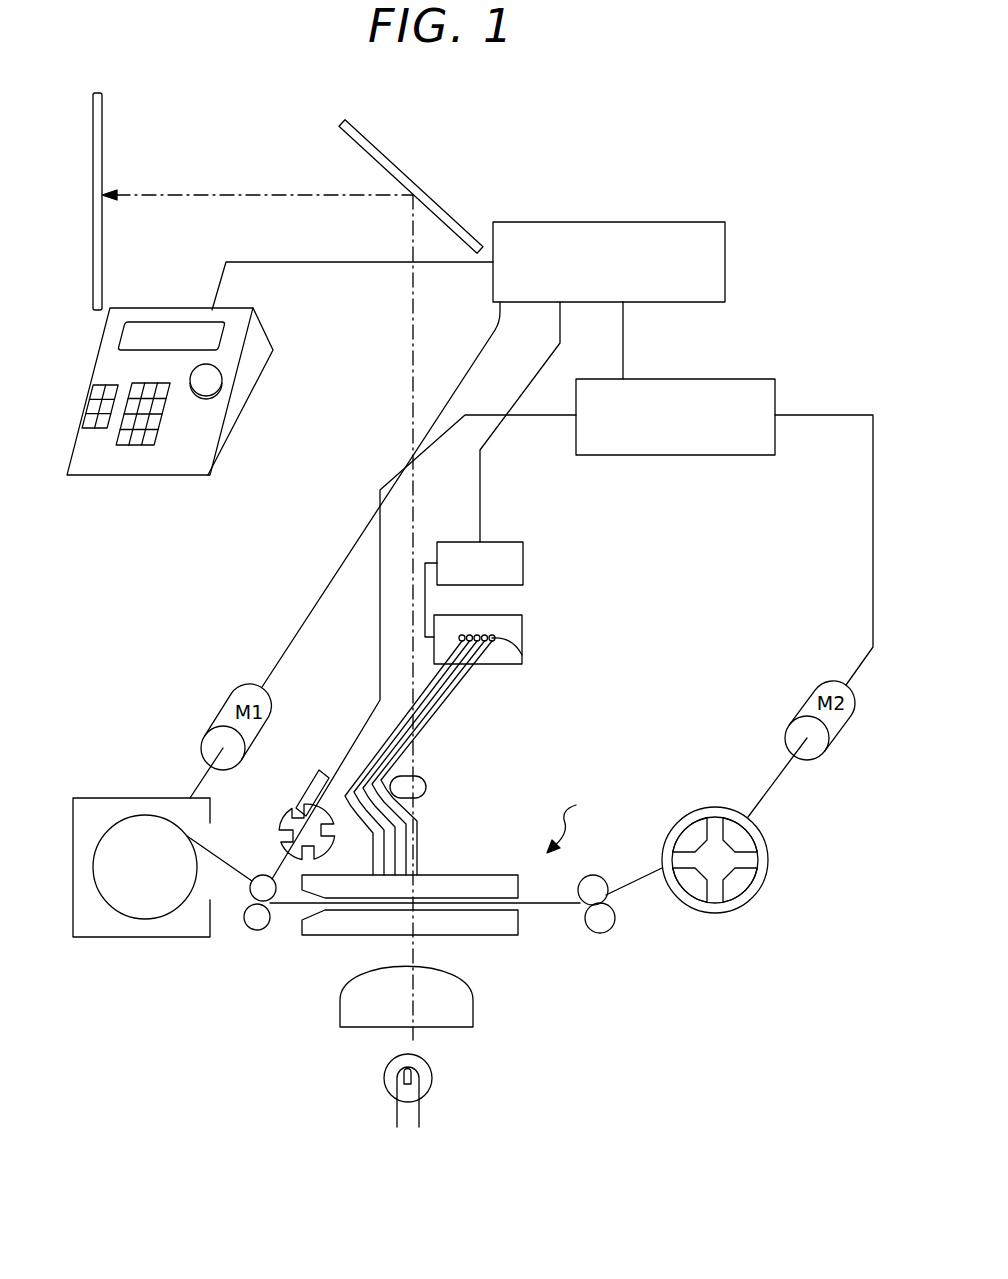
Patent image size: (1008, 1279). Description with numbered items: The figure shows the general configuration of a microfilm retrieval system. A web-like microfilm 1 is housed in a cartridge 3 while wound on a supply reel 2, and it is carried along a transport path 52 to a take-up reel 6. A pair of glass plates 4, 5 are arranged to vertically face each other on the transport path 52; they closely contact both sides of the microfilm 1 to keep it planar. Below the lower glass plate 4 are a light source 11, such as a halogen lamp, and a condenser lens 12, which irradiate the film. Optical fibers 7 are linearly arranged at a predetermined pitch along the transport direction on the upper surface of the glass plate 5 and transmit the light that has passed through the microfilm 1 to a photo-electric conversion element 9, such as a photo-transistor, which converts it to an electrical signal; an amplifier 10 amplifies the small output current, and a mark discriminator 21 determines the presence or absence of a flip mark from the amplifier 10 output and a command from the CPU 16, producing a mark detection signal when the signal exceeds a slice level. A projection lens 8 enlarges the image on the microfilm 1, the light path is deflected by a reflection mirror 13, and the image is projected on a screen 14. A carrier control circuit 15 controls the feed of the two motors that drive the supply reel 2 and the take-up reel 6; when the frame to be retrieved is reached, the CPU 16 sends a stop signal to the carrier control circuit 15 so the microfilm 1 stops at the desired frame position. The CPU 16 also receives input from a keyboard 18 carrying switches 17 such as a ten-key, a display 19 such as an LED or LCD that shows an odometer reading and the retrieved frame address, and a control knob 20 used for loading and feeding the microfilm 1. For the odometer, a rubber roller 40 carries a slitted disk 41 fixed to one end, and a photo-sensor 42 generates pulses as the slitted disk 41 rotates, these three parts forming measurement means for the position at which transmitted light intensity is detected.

The microfilm 1 is at (292, 905).
The supply reel 2 is at (136, 912).
The cartridge 3 is at (105, 798).
The glass plate 4 is at (490, 936).
The glass plate 5 is at (490, 875).
The take-up reel 6 is at (762, 888).
The optical fibers 7 is at (420, 826).
The projection lens 8 is at (420, 777).
The photo-electric conversion element 9 is at (522, 655).
The amplifier 10 is at (500, 664).
The light source 11 is at (433, 1074).
The condenser lens 12 is at (474, 1012).
The reflection mirror 13 is at (409, 178).
The screen 14 is at (103, 118).
The carrier control circuit 15 is at (775, 384).
The CPU 16 is at (725, 250).
The switches 17 is at (135, 447).
The keyboard 18 is at (188, 472).
The display 19 is at (148, 326).
The control knob 20 is at (224, 392).
The mark discriminator 21 is at (523, 563).
The rubber roller 40 is at (258, 877).
The slitted disk 41 is at (287, 818).
The photo-sensor 42 is at (320, 770).
The transport path 52 is at (577, 819).